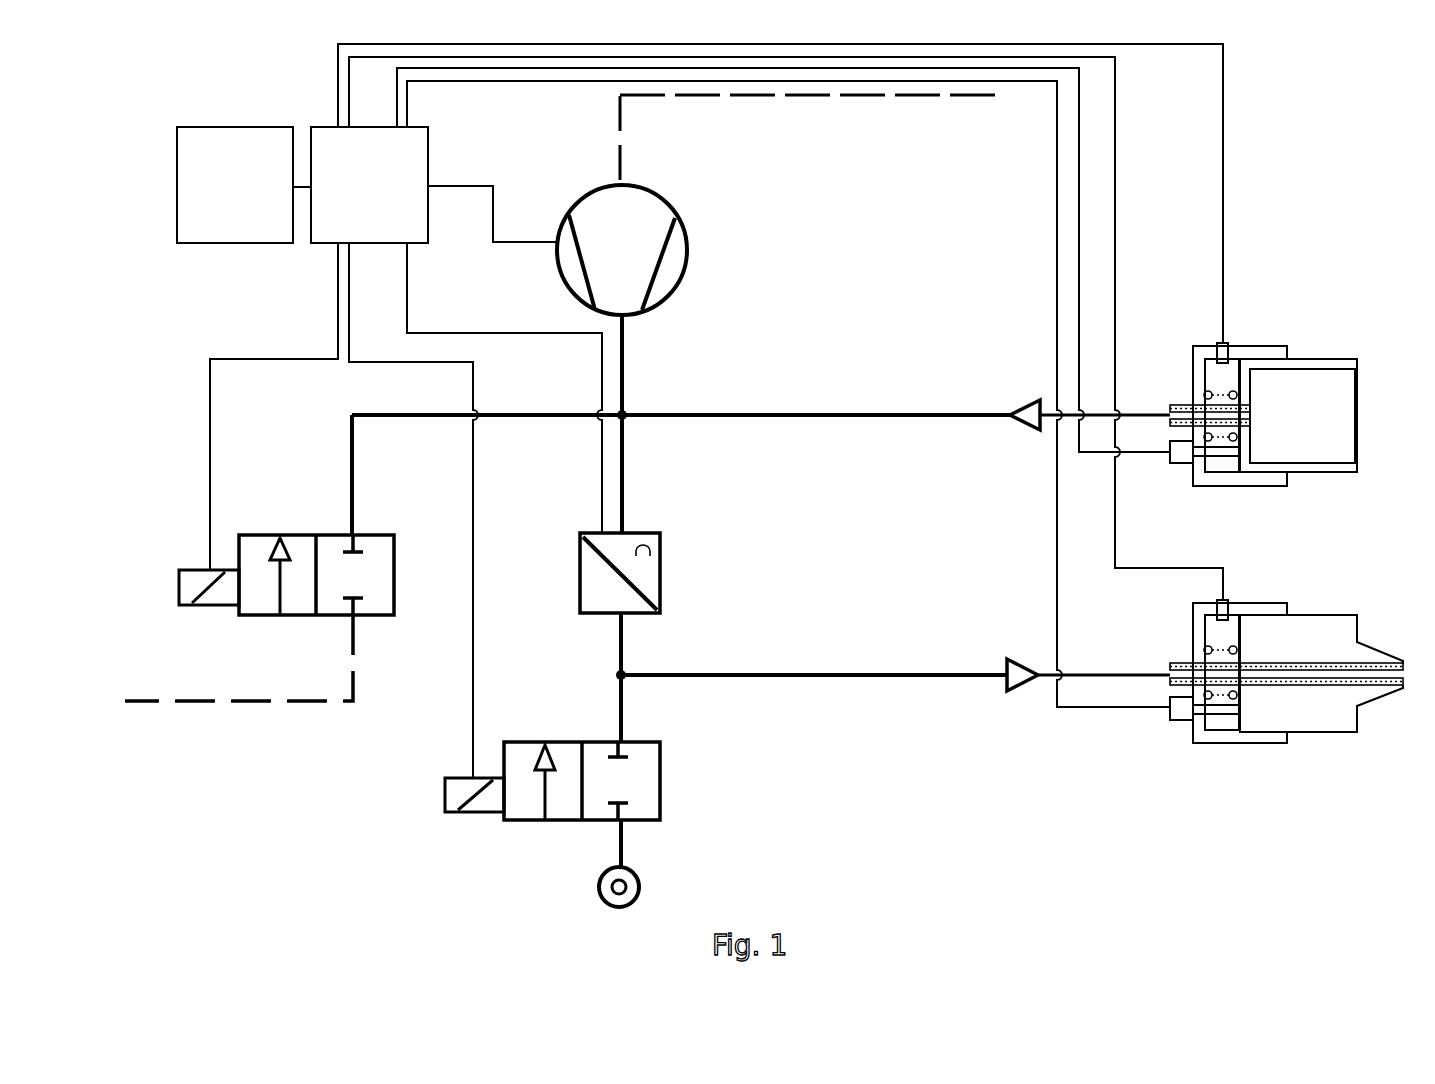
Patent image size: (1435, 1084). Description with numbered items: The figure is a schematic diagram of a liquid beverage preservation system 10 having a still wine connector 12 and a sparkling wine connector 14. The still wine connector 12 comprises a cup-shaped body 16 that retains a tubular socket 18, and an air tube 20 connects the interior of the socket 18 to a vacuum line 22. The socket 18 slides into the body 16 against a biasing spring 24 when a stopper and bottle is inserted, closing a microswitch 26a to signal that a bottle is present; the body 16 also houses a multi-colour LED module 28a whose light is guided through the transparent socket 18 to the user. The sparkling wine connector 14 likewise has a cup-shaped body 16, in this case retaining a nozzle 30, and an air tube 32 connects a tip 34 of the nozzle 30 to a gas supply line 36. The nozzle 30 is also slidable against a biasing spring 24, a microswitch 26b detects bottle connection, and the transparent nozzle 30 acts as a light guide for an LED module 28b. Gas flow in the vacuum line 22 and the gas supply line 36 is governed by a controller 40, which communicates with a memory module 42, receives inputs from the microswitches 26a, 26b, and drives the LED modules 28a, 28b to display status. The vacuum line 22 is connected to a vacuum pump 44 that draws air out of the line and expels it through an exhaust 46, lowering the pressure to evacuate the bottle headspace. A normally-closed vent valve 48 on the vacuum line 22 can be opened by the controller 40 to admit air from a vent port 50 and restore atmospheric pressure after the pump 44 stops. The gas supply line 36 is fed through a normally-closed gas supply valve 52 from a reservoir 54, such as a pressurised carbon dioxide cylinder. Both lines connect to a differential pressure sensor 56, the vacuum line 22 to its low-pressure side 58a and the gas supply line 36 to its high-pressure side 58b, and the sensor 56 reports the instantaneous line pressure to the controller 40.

The liquid beverage preservation system 10 is at (197, 70).
The still wine connector 12 is at (1385, 350).
The sparkling wine connector 14 is at (1380, 740).
The cup-shaped body 16 is at (1268, 347).
The tubular socket 18 is at (1330, 358).
The air tube 20 is at (1170, 407).
The vacuum line 22 is at (921, 410).
The biasing spring 24 is at (1220, 392).
The microswitch 26a is at (1177, 460).
The microswitch 26b is at (1178, 718).
The multi-colour LED module 28a is at (1218, 343).
The LED module 28b is at (1226, 600).
The nozzle 30 is at (1330, 614).
The air tube 32 is at (1175, 663).
The tip 34 is at (1381, 656).
The gas supply line 36 is at (918, 668).
The controller 40 is at (716, 411).
The memory module 42 is at (235, 185).
The vacuum pump 44 is at (678, 287).
The exhaust 46 is at (918, 98).
The vent valve 48 is at (394, 535).
The vent port 50 is at (236, 705).
The gas supply valve 52 is at (662, 775).
The reservoir 54 is at (637, 877).
The pressure sensor 56 is at (625, 552).
The low-pressure side 58a is at (662, 575).
The high-pressure side 58b is at (578, 575).